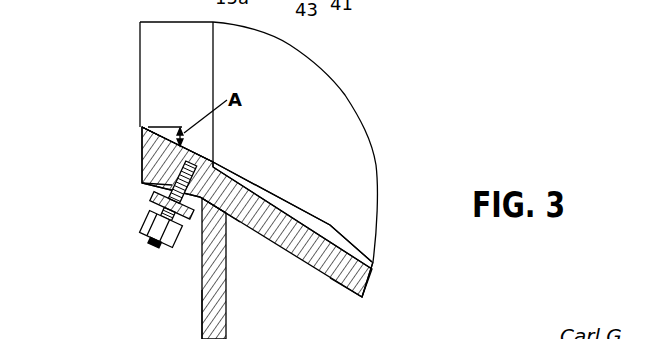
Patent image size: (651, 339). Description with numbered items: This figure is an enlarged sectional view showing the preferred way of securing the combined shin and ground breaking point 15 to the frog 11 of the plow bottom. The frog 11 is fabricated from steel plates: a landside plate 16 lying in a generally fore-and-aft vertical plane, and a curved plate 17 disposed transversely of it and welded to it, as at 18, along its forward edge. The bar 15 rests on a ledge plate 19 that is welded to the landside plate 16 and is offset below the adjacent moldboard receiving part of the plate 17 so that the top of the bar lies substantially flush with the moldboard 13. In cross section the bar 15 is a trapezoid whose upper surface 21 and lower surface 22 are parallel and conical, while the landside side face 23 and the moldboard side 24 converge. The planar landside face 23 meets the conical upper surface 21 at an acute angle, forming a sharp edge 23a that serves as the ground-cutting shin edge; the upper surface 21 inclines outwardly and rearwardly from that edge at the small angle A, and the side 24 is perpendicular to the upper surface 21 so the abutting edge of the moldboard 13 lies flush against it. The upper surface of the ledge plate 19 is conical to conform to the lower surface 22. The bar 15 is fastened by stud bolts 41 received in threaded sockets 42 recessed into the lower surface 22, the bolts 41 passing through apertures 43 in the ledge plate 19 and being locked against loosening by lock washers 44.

The frog 11 is at (202, 302).
The moldboard 13 is at (360, 186).
The combined shin and ground breaking point 15 is at (138, 24).
The landside plate 16 is at (222, 290).
The curved plate 17 is at (342, 284).
The weld 18 is at (228, 214).
The ledge plate 19 is at (145, 193).
The upper surface 21 is at (155, 67).
The lower surface 22 is at (146, 189).
The landside side face 23 is at (139, 146).
The sharp edge 23a is at (139, 126).
The moldboard side 24 is at (246, 180).
The stud bolts 41 is at (160, 241).
The threaded sockets 42 is at (216, 163).
The apertures 43 is at (149, 214).
The lock washers 44 is at (178, 246).